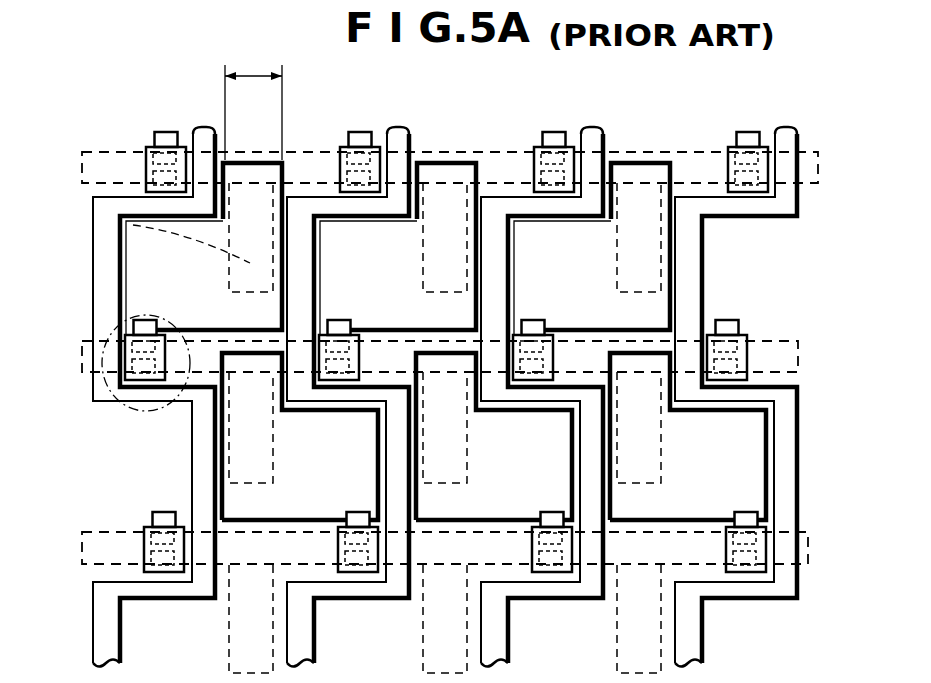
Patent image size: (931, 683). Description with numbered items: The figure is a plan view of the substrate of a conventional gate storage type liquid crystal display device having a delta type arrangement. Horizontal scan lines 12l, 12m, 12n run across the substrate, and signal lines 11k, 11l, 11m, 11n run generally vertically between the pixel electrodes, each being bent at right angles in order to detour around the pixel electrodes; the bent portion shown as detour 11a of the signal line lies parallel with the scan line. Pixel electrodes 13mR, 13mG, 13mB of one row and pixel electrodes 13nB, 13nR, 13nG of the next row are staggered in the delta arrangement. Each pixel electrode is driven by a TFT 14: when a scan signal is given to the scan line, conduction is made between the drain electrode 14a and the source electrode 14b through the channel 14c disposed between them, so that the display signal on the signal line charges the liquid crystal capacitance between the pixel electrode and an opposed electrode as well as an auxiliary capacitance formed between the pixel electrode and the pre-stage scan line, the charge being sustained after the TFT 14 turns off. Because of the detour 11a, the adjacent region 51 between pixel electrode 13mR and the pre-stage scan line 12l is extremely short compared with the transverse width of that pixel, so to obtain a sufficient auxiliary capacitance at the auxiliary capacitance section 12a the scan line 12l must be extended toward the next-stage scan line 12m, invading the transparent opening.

The signal line 11k is at (207, 126).
The detour of the signal line 11a is at (337, 380).
The signal line 11l is at (361, 375).
The signal line 11m is at (566, 375).
The signal line 11n is at (752, 372).
The auxiliary capacitance section 12a is at (93, 205).
The scan line (pre-stage) 12l is at (820, 168).
The scan line 12m is at (800, 360).
The scan line 12n is at (812, 556).
The pixel electrode 13mR is at (152, 307).
The pixel electrode 13mG is at (397, 271).
The pixel electrode 13mB is at (591, 271).
The pixel electrode 13nB is at (355, 475).
The pixel electrode 13nR is at (494, 462).
The pixel electrode 13nG is at (688, 462).
The TFT 14 is at (106, 345).
The drain electrode 14a is at (138, 395).
The source electrode 14b is at (130, 321).
The channel 14c is at (124, 352).
The adjacent region 51 is at (256, 74).